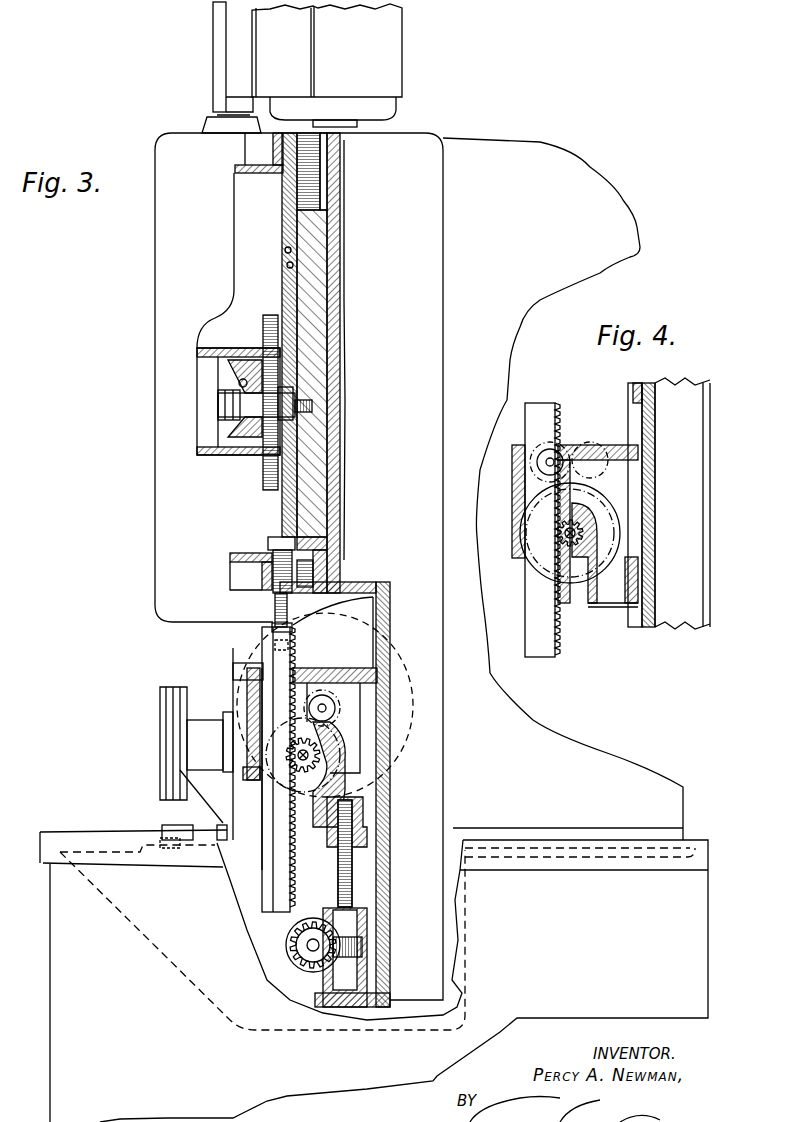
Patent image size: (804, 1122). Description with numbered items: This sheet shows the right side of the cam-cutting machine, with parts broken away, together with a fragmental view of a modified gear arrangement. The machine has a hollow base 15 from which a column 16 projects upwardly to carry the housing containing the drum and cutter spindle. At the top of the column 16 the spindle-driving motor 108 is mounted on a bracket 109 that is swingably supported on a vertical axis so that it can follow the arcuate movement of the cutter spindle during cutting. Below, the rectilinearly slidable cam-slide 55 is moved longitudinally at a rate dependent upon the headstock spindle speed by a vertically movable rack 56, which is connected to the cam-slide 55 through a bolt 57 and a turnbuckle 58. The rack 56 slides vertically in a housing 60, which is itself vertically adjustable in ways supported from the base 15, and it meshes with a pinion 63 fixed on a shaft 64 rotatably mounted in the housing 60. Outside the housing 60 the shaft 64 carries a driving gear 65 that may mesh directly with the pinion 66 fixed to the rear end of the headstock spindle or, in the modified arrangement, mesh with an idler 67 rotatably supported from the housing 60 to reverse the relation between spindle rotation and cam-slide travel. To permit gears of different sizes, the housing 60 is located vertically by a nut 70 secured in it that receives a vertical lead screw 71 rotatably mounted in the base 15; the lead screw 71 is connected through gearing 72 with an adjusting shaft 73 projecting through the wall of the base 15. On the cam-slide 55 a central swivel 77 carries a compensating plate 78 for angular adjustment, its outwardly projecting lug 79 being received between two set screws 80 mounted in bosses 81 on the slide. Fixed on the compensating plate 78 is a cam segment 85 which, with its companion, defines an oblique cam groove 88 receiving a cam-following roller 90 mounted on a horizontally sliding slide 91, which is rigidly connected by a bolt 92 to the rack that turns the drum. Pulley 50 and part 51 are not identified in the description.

In FIG. 3, the hollow base 15 is at (574, 964).
In FIG. 3, the column 16 is at (622, 237).
In FIG. 3, the pulley 50 is at (160, 753).
In FIG. 3, the motor base 51 is at (163, 806).
In FIG. 3, the cam-slide 55 is at (313, 317).
In FIG. 3, the rack 56 is at (280, 653).
In FIG. 4, the rack 56 is at (532, 628).
In FIG. 3, the bolt 57 is at (275, 602).
In FIG. 3, the turnbuckle 58 is at (275, 573).
In FIG. 3, the housing 60 is at (248, 683).
In FIG. 4, the housing 60 is at (528, 560).
In FIG. 3, the pinion 63 is at (313, 757).
In FIG. 4, the pinion 63 is at (583, 530).
In FIG. 3, the shaft 64 is at (297, 767).
In FIG. 4, the shaft 64 is at (580, 513).
In FIG. 3, the driving gear 65 is at (333, 737).
In FIG. 4, the driving gear 65 is at (570, 597).
In FIG. 3, the pinion 66 is at (333, 700).
In FIG. 4, the pinion 66 is at (590, 445).
In FIG. 4, the idler 67 is at (543, 443).
In FIG. 3, the nut 70 is at (347, 823).
In FIG. 3, the lead screw 71 is at (338, 868).
In FIG. 3, the gearing 72 is at (363, 943).
In FIG. 3, the adjusting shaft 73 is at (313, 945).
In FIG. 3, the swivel 77 is at (312, 405).
In FIG. 3, the compensating plate 78 is at (283, 343).
In FIG. 3, the lug 79 is at (287, 230).
In FIG. 3, the set screws 80 is at (287, 252).
In FIG. 3, the bosses 81 is at (290, 267).
In FIG. 3, the cam segment 85 is at (233, 300).
In FIG. 3, the cam groove 88 is at (263, 470).
In FIG. 3, the cam-following roller 90 is at (297, 375).
In FIG. 3, the slide 91 is at (232, 373).
In FIG. 3, the bolt 92 is at (228, 387).
In FIG. 3, the spindle-driving motor 108 is at (390, 52).
In FIG. 3, the bracket 109 is at (212, 47).